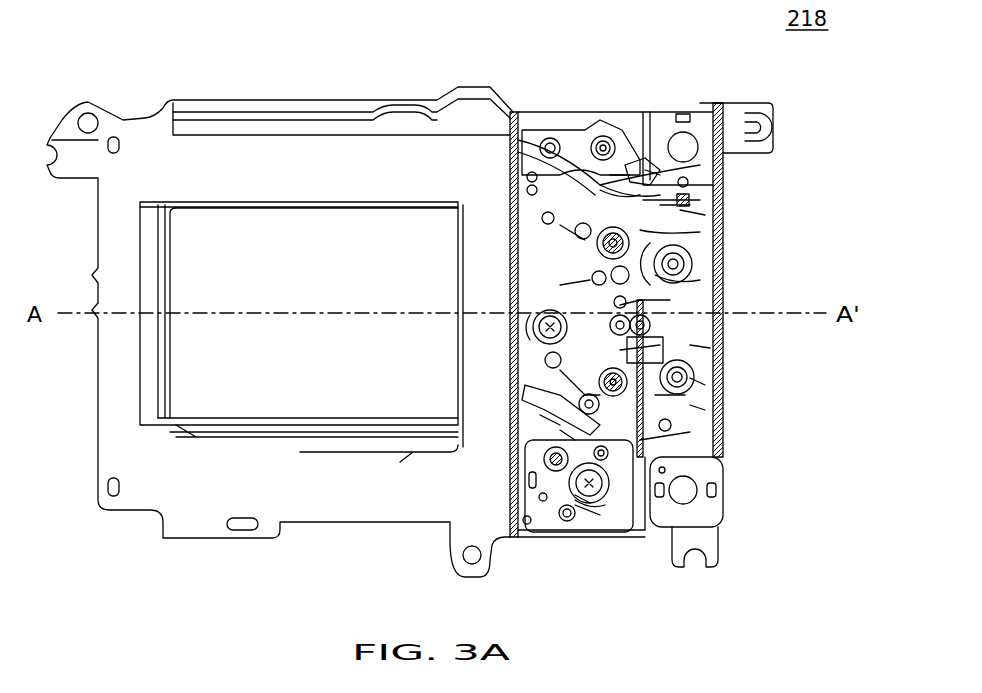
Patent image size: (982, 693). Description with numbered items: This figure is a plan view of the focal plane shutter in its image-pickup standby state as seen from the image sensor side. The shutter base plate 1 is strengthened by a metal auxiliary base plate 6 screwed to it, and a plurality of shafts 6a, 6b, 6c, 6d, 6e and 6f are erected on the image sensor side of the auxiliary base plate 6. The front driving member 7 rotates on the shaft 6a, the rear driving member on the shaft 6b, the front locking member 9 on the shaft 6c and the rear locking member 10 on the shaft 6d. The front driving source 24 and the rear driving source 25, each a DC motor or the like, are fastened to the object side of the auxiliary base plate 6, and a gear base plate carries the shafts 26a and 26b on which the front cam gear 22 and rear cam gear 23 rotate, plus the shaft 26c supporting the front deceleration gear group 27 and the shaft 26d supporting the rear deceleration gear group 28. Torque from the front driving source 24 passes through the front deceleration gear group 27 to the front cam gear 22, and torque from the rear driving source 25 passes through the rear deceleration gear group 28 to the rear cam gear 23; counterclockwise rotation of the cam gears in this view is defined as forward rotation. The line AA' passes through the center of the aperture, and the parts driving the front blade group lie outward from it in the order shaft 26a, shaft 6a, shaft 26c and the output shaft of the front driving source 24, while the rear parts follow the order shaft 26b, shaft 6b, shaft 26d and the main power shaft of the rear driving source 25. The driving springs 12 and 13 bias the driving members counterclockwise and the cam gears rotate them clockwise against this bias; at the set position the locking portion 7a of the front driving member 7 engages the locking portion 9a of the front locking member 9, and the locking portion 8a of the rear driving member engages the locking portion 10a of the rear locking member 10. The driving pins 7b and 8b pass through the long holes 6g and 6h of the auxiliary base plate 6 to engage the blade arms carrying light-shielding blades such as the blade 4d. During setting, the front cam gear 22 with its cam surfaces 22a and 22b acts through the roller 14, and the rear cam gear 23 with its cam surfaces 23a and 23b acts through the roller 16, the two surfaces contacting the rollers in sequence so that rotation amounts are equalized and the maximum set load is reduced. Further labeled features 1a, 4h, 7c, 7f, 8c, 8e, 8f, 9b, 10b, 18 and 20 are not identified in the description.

The shutter base plate 1 is at (117, 365).
The body lug 1a is at (155, 260).
The display unit lower edge 4h is at (307, 433).
The light-shielding blade 4d is at (433, 457).
The auxiliary base plate 6 is at (757, 103).
The shaft 6a is at (600, 388).
The shaft 6b is at (690, 182).
The shaft 6c is at (578, 500).
The shaft 6d is at (598, 138).
The shaft 6e is at (563, 520).
The shaft 6f is at (540, 148).
The long hole 6g is at (545, 405).
The long hole 6h is at (548, 168).
The front driving member 7 is at (598, 380).
The locking portion 7a is at (608, 500).
The driving pin 7b is at (600, 510).
The gear 7c is at (540, 330).
The gear portion 7f is at (580, 398).
The locking portion 8a is at (600, 190).
The driving pin 8b is at (570, 230).
The lever portion 8c is at (575, 278).
The lever portion 8e is at (620, 192).
The lever portion 8f is at (580, 203).
The front locking member 9 is at (598, 512).
The locking portion 9a is at (543, 427).
The lever portion 9b is at (565, 440).
The rear locking member 10 is at (540, 135).
The locking portion 10a is at (655, 170).
The lever portion 10b is at (618, 172).
The driving spring 12 is at (665, 393).
The driving spring 13 is at (597, 245).
The roller 14 is at (648, 322).
The roller 16 is at (650, 240).
The gear 18 is at (640, 365).
The gear 20 is at (655, 300).
The front cam gear 22 is at (690, 360).
The cam surface 22a is at (695, 407).
The cam surface 22b is at (700, 350).
The rear cam gear 23 is at (680, 252).
The cam surface 23a is at (620, 305).
The cam surface 23b is at (607, 258).
The front driving source 24 is at (700, 513).
The rear driving source 25 is at (700, 128).
The shaft 26a is at (695, 378).
The shaft 26b is at (675, 268).
The shaft 26c is at (671, 425).
The shaft 26d is at (675, 205).
The front deceleration gear group 27 is at (650, 437).
The rear deceleration gear group 28 is at (690, 215).